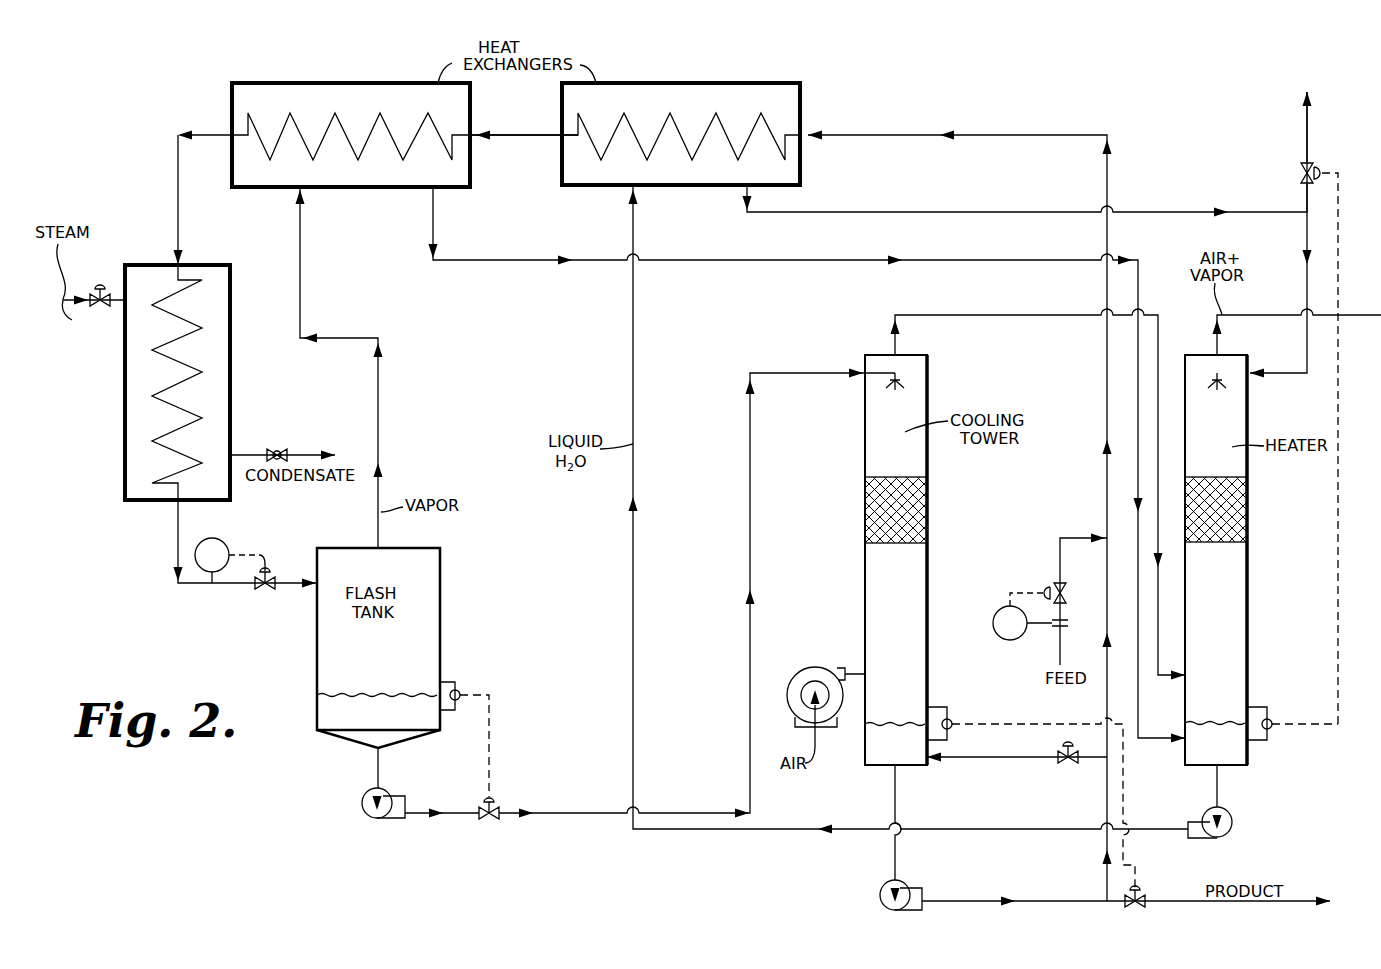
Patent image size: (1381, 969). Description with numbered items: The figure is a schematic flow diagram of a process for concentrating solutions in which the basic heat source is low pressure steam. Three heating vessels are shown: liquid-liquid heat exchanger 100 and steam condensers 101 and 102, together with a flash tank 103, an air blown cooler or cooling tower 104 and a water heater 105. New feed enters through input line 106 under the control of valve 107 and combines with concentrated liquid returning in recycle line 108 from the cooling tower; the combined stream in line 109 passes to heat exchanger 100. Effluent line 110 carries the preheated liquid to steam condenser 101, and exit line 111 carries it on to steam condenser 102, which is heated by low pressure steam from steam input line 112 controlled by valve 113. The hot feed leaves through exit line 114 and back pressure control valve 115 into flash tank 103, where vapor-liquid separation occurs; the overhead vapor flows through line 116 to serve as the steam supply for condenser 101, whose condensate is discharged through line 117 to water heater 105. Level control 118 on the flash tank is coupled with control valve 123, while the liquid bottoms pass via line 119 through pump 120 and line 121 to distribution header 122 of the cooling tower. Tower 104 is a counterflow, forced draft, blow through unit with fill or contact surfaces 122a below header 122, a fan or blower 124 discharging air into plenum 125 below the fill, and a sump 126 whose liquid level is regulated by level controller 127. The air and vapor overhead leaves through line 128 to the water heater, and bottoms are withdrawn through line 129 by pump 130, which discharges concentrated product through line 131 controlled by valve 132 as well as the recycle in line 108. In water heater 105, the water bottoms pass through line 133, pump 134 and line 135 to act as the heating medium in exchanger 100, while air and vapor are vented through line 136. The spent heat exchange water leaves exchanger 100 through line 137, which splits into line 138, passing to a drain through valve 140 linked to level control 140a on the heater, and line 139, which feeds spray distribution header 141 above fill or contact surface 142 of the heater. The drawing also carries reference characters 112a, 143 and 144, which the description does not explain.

The liquid-liquid heat exchanger 100 is at (705, 64).
The steam condenser 101 is at (335, 83).
The steam condenser 102 is at (232, 372).
The flash tank 103 is at (442, 568).
The cooling tower 104 is at (865, 355).
The water heater 105 is at (1248, 604).
The input line 106 is at (1060, 638).
The valve 107 is at (1060, 588).
The recycle line 108 is at (1107, 702).
The line 109 is at (880, 140).
The effluent line 110 is at (526, 136).
The exit line 111 is at (178, 204).
The steam input line 112 is at (93, 317).
The condensate valve 112a is at (277, 450).
The valve 113 is at (102, 288).
The exit line 114 is at (176, 544).
The back pressure control valve 115 is at (256, 562).
The line 116 is at (378, 404).
The line 117 is at (431, 234).
The level control 118 is at (458, 691).
The line 119 is at (376, 769).
The pump 120 is at (373, 818).
The line 121 is at (750, 528).
The distribution header 122 is at (898, 378).
The fill or contact surfaces 122a is at (917, 544).
The control valve 123 is at (489, 822).
The propeller fan or centrifugal blower 124 is at (817, 668).
The plenum 125 is at (875, 607).
The sump 126 is at (872, 750).
The level controller 127 is at (952, 718).
The line 128 is at (972, 315).
The line 129 is at (895, 792).
The pump 130 is at (880, 893).
The line 131 is at (1264, 902).
The valve 132 is at (1142, 892).
The line 133 is at (1217, 793).
The pump 134 is at (1232, 832).
The line 135 is at (688, 830).
The line 136 is at (1275, 315).
The line 137 is at (942, 212).
The line 138 is at (1307, 142).
The line 139 is at (1307, 234).
The valve 140 is at (1322, 172).
The level control 140a is at (1268, 718).
The spray distribution header 141 is at (1218, 375).
The fill or contact surface 142 is at (1230, 544).
The valve 143 is at (1068, 763).
The line from heater to cooling tower 144 is at (994, 758).